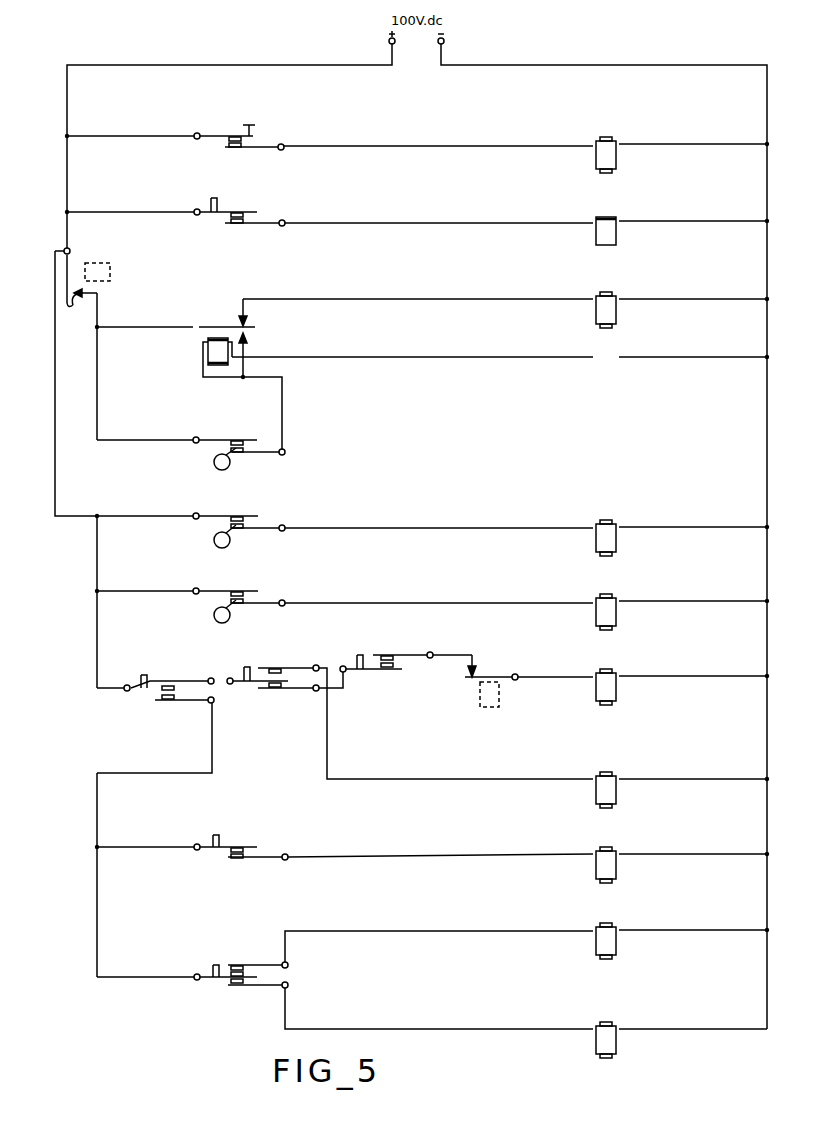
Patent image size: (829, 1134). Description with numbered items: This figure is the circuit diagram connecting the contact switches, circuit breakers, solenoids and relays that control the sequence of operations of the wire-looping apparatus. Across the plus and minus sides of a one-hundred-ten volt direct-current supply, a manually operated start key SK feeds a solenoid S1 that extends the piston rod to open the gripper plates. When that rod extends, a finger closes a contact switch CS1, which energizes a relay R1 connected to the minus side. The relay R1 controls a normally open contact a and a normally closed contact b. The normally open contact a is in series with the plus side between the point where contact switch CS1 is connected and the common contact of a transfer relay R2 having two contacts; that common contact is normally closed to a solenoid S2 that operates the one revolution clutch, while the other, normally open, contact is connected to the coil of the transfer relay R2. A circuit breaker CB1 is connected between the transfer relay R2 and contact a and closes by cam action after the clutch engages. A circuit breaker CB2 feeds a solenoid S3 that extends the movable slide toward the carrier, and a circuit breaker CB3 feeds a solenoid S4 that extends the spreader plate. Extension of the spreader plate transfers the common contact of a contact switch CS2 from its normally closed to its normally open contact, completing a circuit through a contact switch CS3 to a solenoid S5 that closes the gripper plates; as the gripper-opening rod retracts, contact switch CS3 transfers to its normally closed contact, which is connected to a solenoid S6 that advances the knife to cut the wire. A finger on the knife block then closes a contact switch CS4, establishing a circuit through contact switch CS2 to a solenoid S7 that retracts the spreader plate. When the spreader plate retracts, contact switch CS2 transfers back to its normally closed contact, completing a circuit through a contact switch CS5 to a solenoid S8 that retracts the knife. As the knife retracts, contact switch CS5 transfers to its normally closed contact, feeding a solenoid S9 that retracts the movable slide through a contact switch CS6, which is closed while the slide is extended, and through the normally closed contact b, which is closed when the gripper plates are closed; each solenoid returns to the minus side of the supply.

The start key SK is at (256, 138).
The contact switch CS1 is at (200, 210).
The contact switch CS2 is at (140, 684).
The contact switch CS3 is at (204, 975).
The contact switch CS4 is at (204, 845).
The contact switch CS5 is at (242, 676).
The contact switch CS6 is at (355, 664).
The circuit breaker CB1 is at (212, 446).
The circuit breaker CB2 is at (212, 524).
The circuit breaker CB3 is at (212, 599).
The relay R1 is at (596, 236).
The transfer relay R2 is at (208, 353).
The normally open relay contact a is at (120, 268).
The normally closed relay contact b is at (466, 676).
The solenoid S1 is at (596, 157).
The solenoid S2 is at (596, 312).
The solenoid S3 is at (596, 543).
The solenoid S4 is at (596, 617).
The solenoid S5 is at (596, 945).
The solenoid S6 is at (596, 1041).
The solenoid S7 is at (596, 867).
The solenoid S8 is at (596, 794).
The solenoid S9 is at (596, 689).